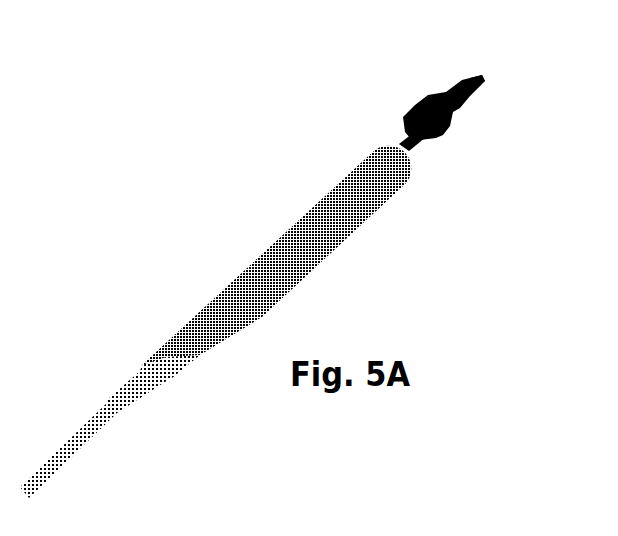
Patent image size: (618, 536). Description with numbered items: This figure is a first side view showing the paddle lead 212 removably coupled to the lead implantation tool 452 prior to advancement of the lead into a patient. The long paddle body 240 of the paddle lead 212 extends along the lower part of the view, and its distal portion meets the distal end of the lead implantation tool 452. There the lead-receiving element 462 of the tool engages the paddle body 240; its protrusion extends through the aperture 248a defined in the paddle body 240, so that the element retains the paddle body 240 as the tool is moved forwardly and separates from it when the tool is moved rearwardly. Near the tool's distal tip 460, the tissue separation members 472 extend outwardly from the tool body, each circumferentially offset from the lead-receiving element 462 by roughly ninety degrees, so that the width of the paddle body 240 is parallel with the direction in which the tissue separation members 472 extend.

The paddle lead 212 is at (102, 299).
The paddle body 240 is at (263, 262).
The aperture 248a is at (392, 160).
The lead implantation tool 452 is at (398, 100).
The distal tip 460 is at (482, 74).
The lead-receiving element 462 is at (414, 155).
The tissue separation members 472 is at (477, 115).